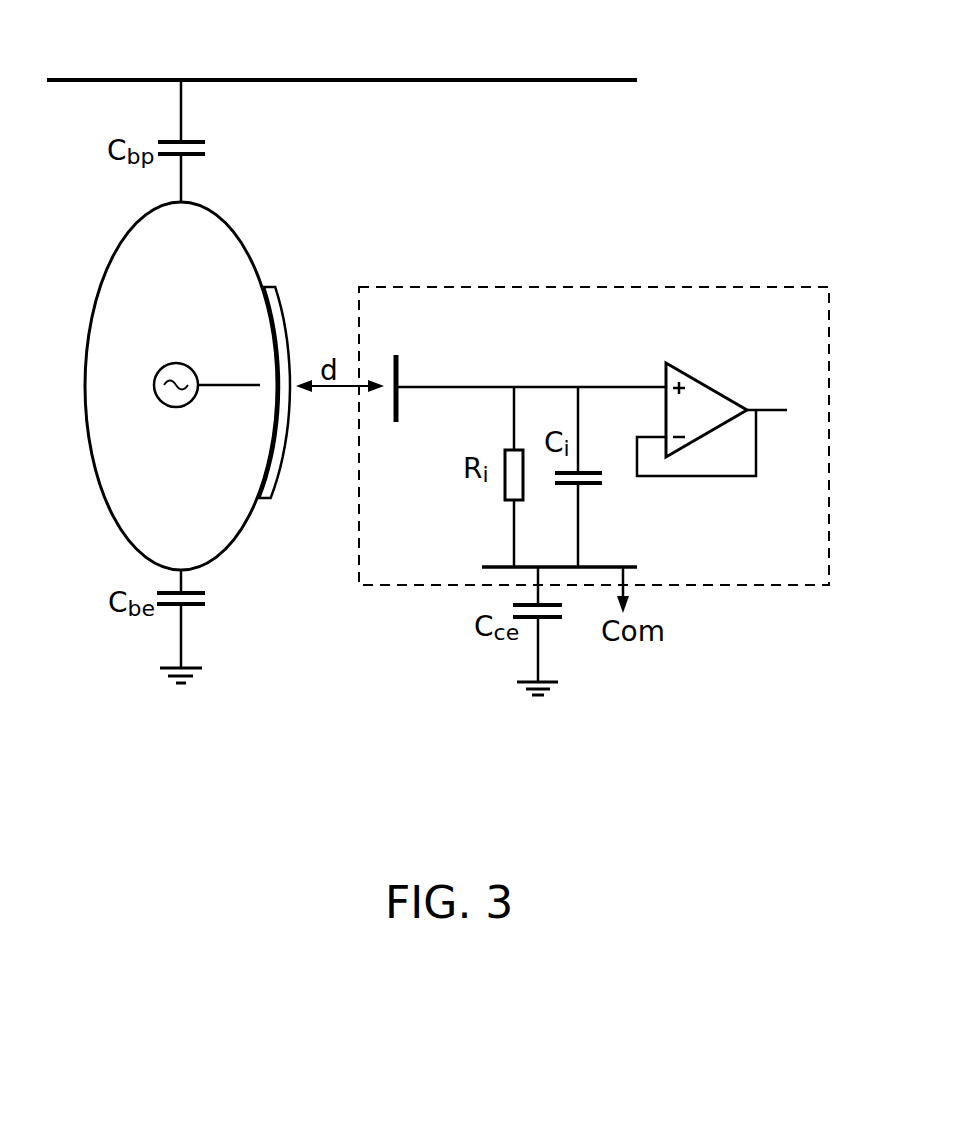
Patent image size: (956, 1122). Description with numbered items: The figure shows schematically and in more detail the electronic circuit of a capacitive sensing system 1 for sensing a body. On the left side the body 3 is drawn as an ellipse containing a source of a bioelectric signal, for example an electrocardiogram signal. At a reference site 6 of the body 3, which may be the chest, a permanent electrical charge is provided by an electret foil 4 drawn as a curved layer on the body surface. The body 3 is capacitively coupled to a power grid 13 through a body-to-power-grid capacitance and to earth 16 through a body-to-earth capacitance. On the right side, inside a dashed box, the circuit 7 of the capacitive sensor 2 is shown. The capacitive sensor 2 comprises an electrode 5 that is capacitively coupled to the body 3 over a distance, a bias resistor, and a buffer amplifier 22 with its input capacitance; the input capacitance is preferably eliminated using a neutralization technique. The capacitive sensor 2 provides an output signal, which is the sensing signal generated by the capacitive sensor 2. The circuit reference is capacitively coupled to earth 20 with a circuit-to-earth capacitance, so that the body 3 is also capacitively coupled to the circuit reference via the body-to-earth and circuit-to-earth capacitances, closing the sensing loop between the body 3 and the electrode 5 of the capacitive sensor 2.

The capacitive sensing system 1 is at (680, 203).
The capacitive sensor 2 is at (783, 286).
The body 3 is at (237, 535).
The electret foil 4 is at (274, 452).
The electrode 5 is at (398, 408).
The reference site 6 is at (307, 365).
The circuit 7 is at (531, 343).
The power grid 13 is at (412, 78).
The earth 16 is at (148, 690).
The earth 20 is at (502, 698).
The buffer amplifier 22 is at (718, 390).